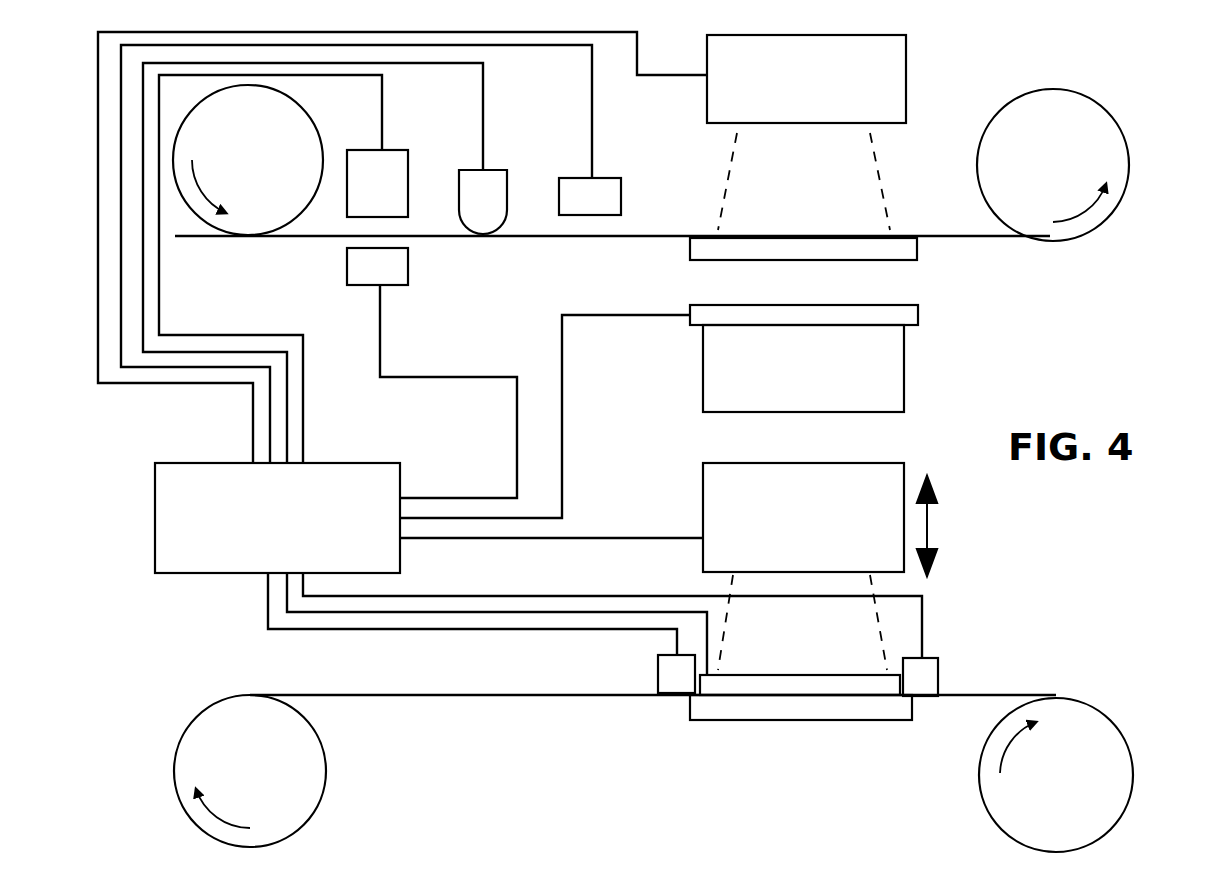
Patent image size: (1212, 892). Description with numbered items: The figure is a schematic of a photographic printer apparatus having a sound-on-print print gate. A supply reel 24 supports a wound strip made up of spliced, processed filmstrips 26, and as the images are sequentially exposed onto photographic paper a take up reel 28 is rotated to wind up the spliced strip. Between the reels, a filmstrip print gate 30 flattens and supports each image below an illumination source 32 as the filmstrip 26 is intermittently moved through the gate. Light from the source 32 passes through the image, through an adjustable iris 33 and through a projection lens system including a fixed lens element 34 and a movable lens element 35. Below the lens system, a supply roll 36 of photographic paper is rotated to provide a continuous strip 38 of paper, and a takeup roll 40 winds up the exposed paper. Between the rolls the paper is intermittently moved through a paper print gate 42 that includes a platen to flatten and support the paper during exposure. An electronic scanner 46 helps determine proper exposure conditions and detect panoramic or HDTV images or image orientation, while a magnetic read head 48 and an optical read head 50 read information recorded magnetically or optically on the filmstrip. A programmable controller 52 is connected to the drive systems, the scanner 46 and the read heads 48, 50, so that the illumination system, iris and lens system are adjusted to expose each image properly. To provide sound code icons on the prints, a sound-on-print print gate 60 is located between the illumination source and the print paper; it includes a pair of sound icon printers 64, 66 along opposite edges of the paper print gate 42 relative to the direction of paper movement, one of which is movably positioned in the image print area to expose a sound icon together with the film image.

The supply reel 24 is at (212, 228).
The filmstrips 26 is at (940, 238).
The take up reel 28 is at (1130, 157).
The filmstrip print gate 30 is at (690, 245).
The illumination source 32 is at (906, 47).
The adjustable iris 33 is at (918, 312).
The fixed lens element 34 is at (703, 375).
The movable lens element 35 is at (703, 512).
The supply roll 36 is at (325, 760).
The continuous strip of paper 38 is at (497, 698).
The takeup roll 40 is at (1132, 762).
The paper print gate 42 is at (682, 750).
The electronic scanner 46 is at (408, 181).
The magnetic read head 48 is at (507, 183).
The optical read head 50 is at (621, 193).
The programmable controller 52 is at (248, 575).
The sound-on-print print gate 60 is at (771, 675).
The sound icon printer 64 is at (658, 687).
The sound icon printer 66 is at (938, 660).